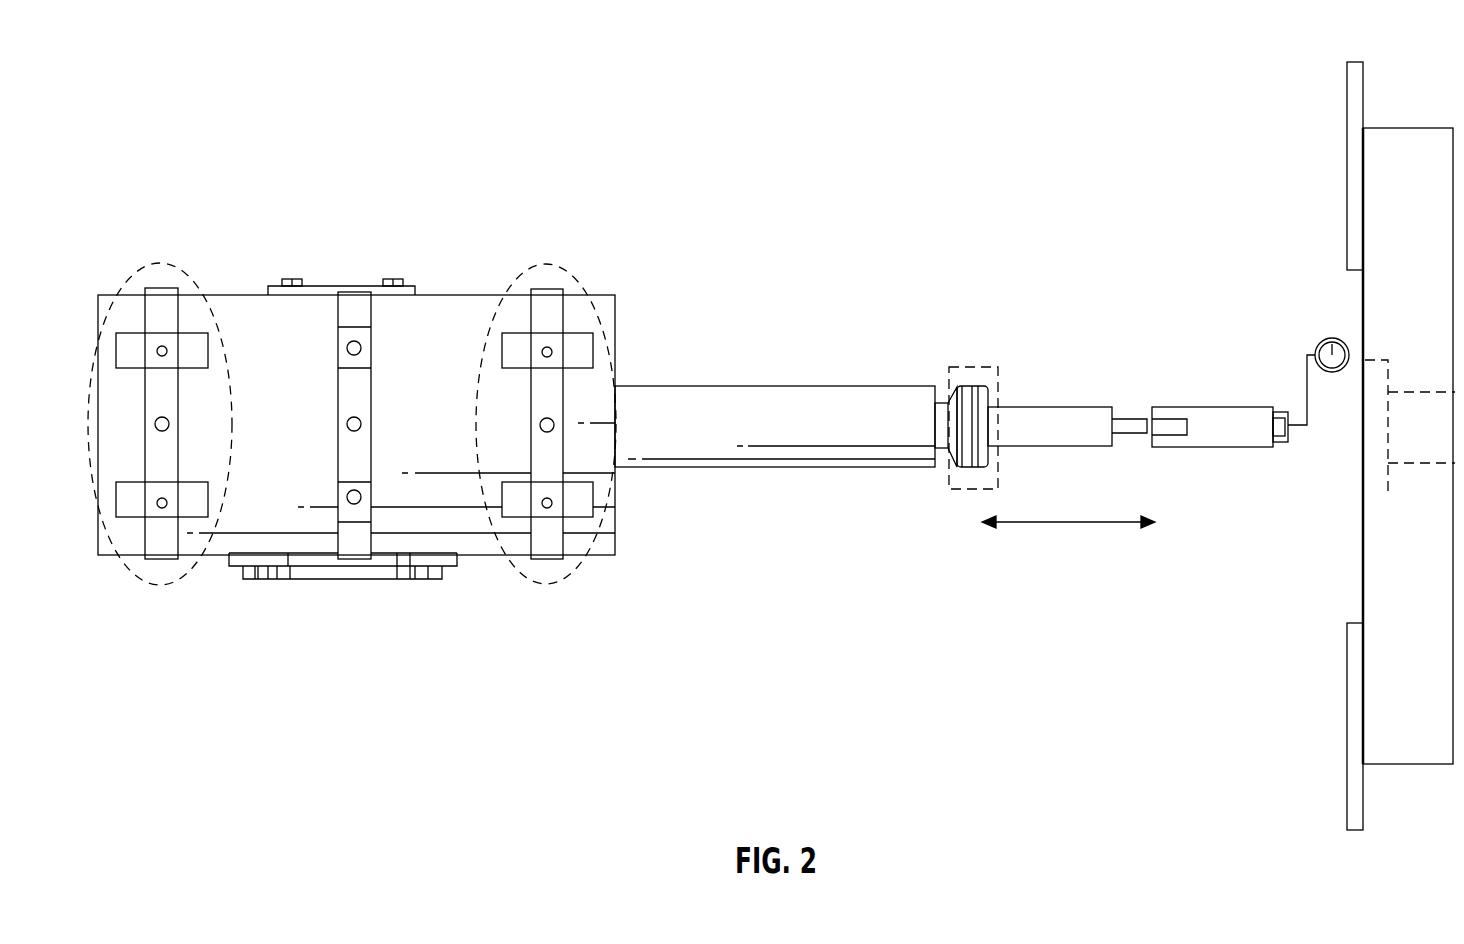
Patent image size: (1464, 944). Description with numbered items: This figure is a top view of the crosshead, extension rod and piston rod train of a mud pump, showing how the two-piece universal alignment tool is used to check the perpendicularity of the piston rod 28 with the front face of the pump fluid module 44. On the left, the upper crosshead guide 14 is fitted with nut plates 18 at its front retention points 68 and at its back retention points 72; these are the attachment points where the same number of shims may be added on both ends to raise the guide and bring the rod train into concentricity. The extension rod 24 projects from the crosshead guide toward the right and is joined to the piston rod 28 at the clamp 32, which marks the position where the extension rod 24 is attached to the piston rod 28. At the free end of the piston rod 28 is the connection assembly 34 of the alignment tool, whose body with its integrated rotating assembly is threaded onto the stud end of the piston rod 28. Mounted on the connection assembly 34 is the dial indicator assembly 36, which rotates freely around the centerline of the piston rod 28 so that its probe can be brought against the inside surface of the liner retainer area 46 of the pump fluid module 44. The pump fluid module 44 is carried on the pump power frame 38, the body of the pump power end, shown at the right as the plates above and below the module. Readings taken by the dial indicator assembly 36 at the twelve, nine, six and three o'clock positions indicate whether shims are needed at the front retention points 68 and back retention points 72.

The upper crosshead guide 14 is at (588, 292).
The nut plate 18 is at (193, 328).
The extension rod 24 is at (748, 383).
The piston rod 28 is at (1093, 400).
The clamp 32 is at (967, 363).
The connection assembly 34 is at (1208, 400).
The dial indicator assembly 36 is at (1330, 336).
The pump power frame 38 is at (1365, 58).
The pump fluid module 44 is at (1390, 183).
The liner retainer area 46 is at (1378, 493).
The front retention points 68 is at (572, 580).
The back retention points 72 is at (148, 262).